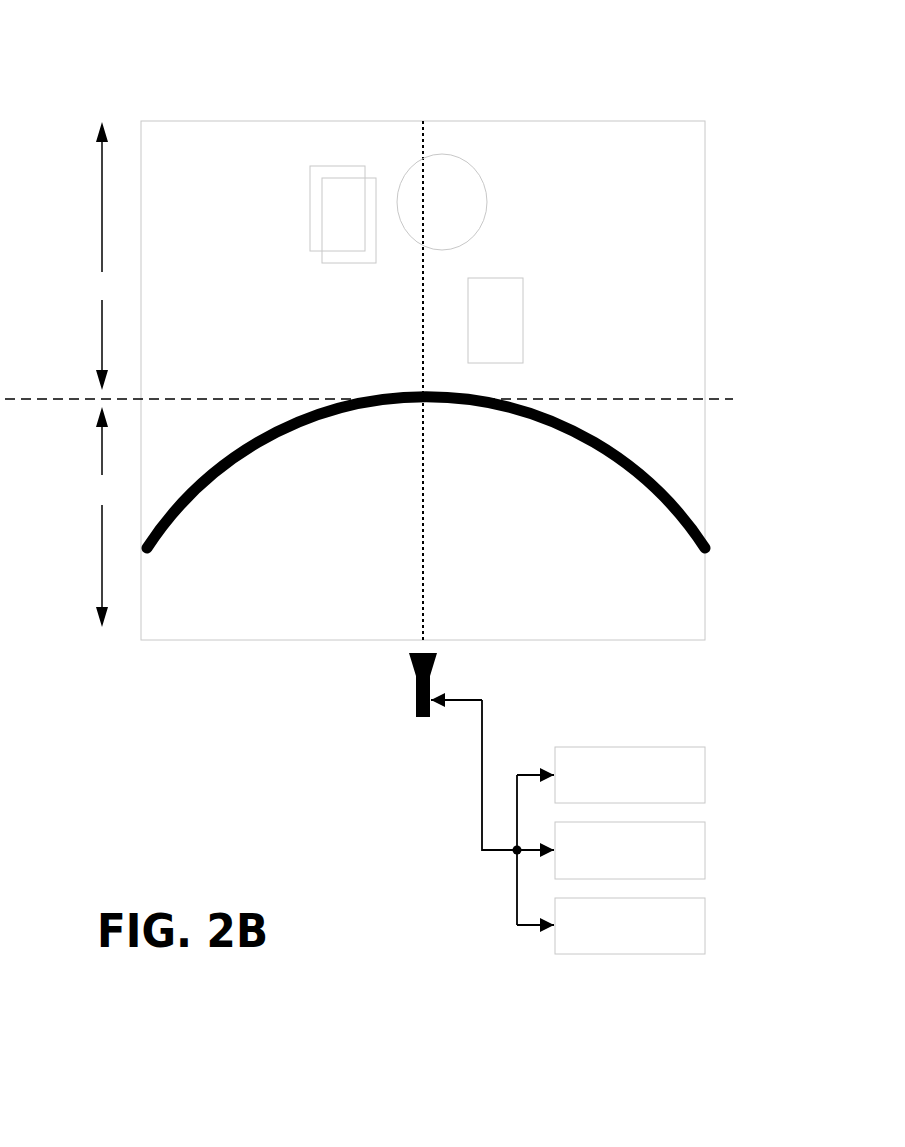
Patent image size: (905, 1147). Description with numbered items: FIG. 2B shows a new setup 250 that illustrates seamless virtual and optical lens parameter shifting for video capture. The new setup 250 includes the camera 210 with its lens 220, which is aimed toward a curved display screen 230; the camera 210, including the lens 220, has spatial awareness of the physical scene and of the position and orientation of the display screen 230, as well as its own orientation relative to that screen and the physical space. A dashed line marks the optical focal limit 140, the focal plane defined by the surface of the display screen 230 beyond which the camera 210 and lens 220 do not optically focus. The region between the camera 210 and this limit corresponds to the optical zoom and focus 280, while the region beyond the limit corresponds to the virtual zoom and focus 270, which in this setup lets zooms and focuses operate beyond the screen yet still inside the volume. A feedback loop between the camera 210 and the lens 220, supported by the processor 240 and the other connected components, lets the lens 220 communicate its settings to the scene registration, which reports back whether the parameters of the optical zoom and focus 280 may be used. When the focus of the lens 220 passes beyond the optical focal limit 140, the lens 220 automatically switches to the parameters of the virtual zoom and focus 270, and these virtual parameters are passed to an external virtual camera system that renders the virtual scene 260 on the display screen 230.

The optical focal limit 140 is at (791, 410).
The camera 210 is at (416, 722).
The lens 220 is at (438, 667).
The display screen 230 is at (708, 562).
The processor 240 is at (617, 785).
The new setup 250 is at (617, 860).
The virtual scene 260 is at (617, 935).
The virtual zoom and focus 270 is at (121, 297).
The optical zoom and focus 280 is at (121, 502).